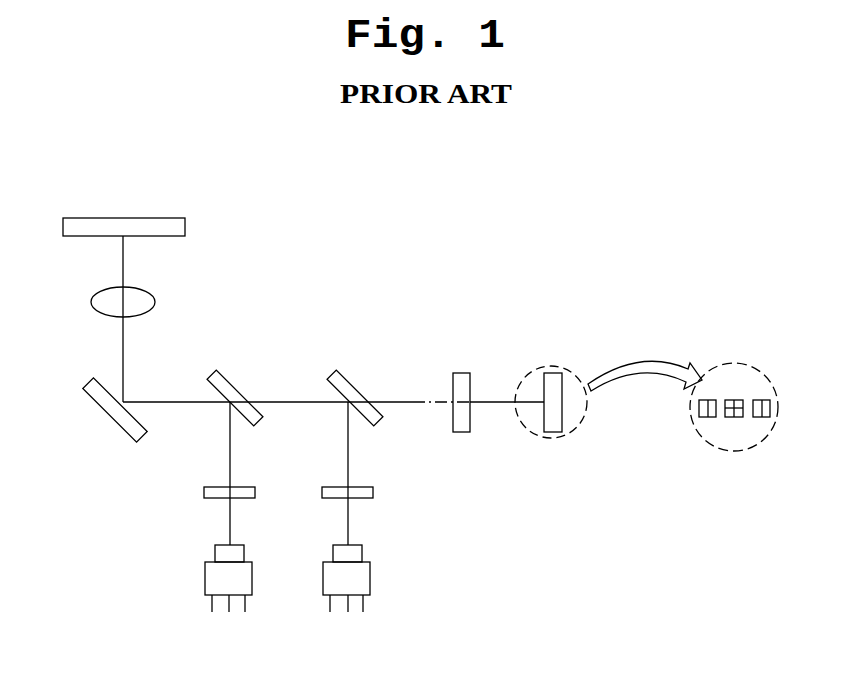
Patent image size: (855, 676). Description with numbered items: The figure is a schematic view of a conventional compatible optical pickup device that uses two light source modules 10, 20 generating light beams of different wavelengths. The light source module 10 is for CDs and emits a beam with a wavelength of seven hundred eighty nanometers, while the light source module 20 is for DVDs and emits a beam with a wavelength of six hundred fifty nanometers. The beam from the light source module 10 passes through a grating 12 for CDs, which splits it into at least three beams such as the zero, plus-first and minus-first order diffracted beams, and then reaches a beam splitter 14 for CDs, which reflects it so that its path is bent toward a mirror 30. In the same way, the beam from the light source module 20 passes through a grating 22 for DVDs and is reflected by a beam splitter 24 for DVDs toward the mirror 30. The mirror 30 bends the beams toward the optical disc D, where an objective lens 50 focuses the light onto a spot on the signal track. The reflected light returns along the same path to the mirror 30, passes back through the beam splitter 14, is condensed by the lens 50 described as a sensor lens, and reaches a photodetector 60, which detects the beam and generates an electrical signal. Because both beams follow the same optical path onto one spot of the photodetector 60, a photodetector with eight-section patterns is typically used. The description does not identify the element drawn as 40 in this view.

The optical disc D is at (185, 226).
The condensing lens 40 is at (155, 300).
The mirror 30 is at (106, 413).
The beam splitter for DVDs 24 is at (233, 384).
The beam splitter for CDs 14 is at (353, 383).
The objective lens 50 is at (462, 373).
The photodetector 60 is at (553, 372).
The grating for DVDs 22 is at (204, 492).
The grating for CDs 12 is at (373, 492).
The light source module for DVDs 20 is at (205, 580).
The light source module for CDs 10 is at (370, 580).